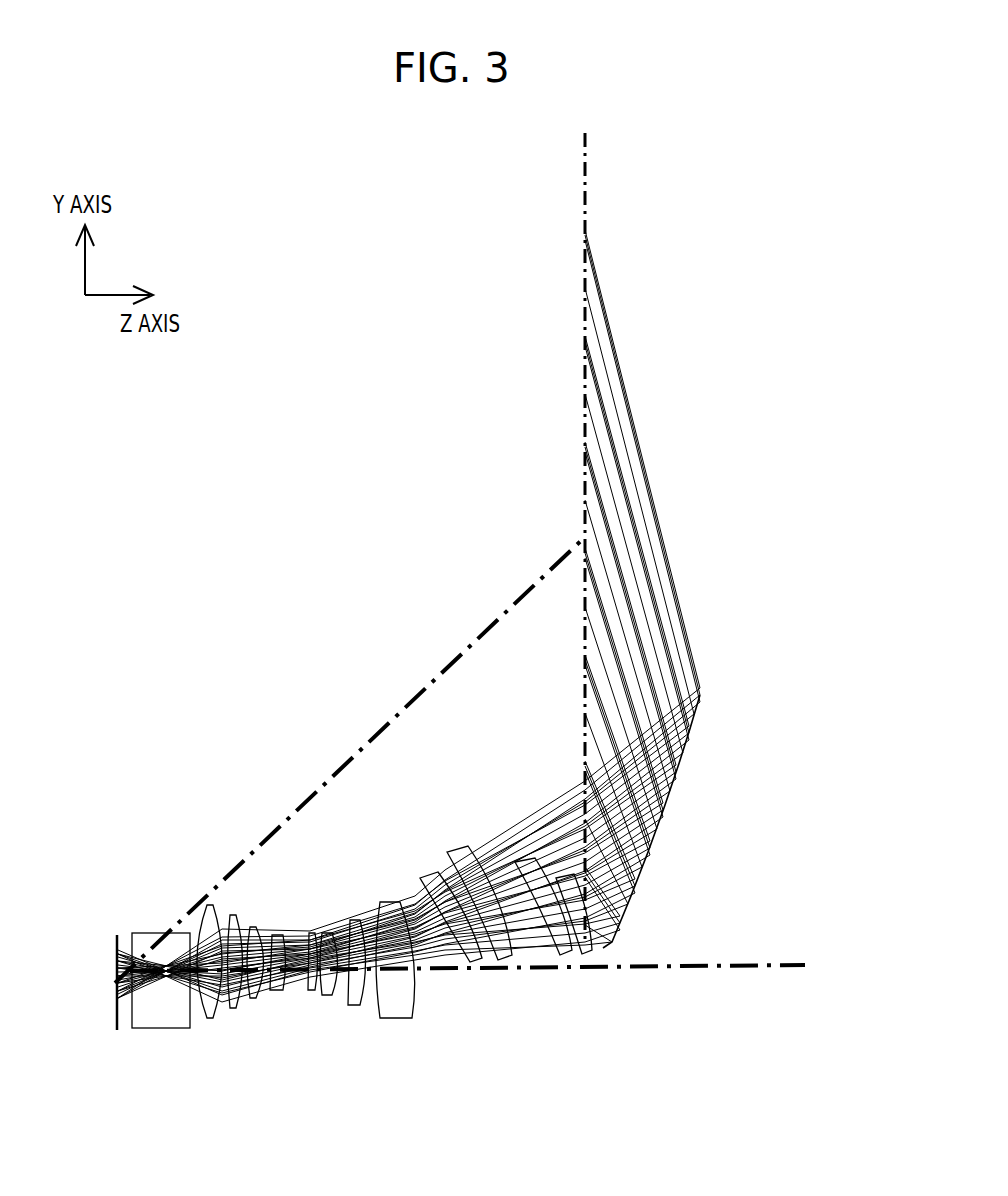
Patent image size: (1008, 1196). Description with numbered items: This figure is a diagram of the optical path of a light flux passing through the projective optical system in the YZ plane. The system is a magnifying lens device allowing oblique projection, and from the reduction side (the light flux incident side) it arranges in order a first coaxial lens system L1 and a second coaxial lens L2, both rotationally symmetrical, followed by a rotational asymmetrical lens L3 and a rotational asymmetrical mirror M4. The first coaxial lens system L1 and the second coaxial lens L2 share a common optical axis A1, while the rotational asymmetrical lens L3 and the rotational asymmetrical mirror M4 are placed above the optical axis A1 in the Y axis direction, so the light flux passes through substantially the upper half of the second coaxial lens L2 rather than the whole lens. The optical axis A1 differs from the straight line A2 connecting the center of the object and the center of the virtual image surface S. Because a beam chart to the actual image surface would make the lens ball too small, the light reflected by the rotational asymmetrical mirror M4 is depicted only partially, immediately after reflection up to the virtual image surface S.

The virtual image surface S is at (578, 219).
The rotational asymmetrical mirror M4 is at (700, 703).
The optical axis A1 is at (788, 963).
The straight line connecting the center of an object and the center of a virtual ima A2 is at (377, 733).
The first coaxial lens system L1 is at (293, 1022).
The second coaxial lens L2 is at (310, 1022).
The rotational asymmetrical lens L3 is at (583, 1022).